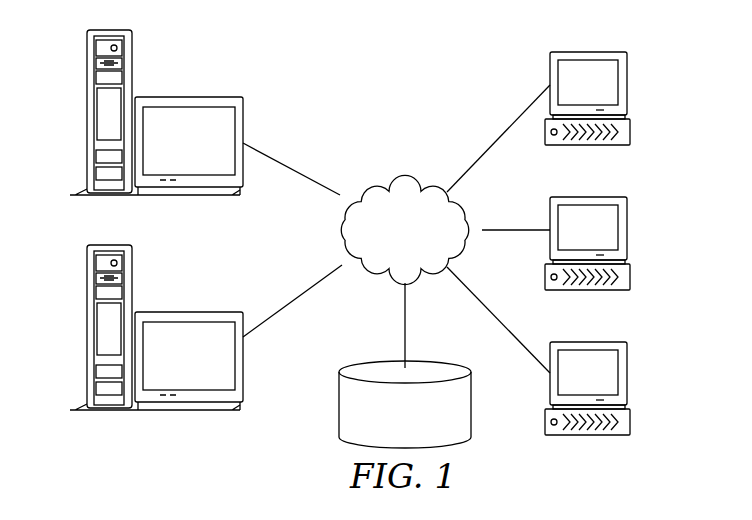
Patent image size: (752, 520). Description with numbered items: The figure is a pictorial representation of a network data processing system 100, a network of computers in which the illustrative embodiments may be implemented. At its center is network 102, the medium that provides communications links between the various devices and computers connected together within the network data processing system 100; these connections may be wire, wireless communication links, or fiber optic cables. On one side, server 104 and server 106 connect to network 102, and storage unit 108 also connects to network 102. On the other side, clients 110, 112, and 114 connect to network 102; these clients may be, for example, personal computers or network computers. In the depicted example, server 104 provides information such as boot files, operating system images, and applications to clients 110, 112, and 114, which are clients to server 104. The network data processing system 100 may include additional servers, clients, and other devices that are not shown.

The network data processing system 100 is at (453, 72).
The network 102 is at (375, 178).
The server 104 is at (87, 113).
The server 106 is at (87, 328).
The storage unit 108 is at (338, 412).
The client 110 is at (627, 82).
The client 112 is at (627, 231).
The client 114 is at (627, 372).